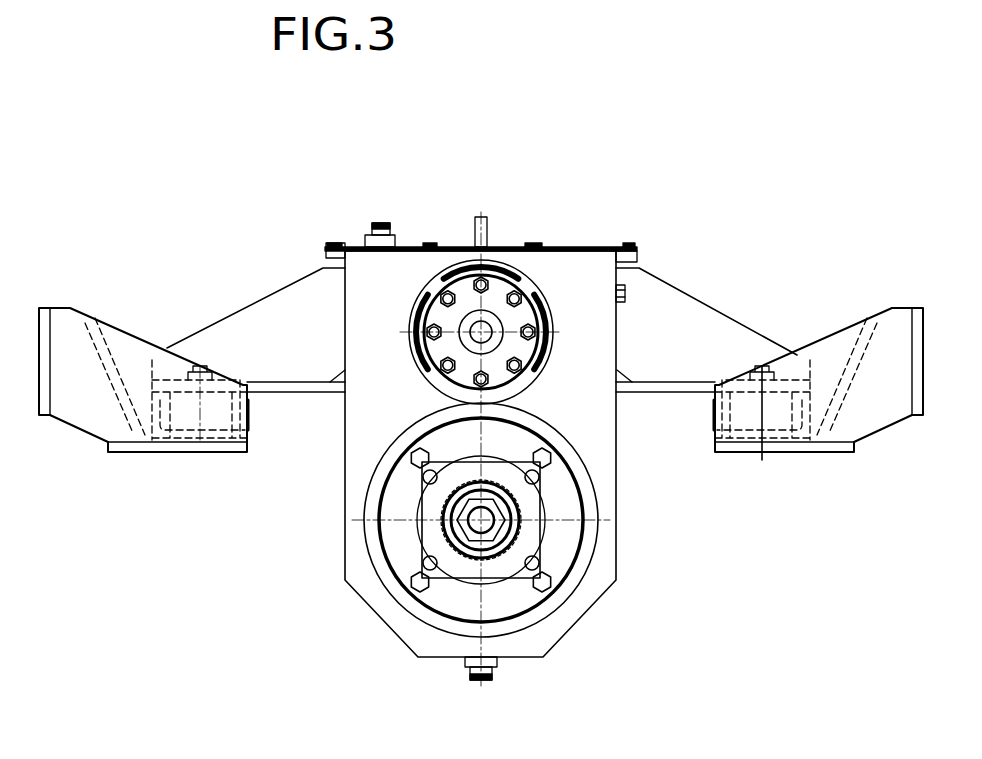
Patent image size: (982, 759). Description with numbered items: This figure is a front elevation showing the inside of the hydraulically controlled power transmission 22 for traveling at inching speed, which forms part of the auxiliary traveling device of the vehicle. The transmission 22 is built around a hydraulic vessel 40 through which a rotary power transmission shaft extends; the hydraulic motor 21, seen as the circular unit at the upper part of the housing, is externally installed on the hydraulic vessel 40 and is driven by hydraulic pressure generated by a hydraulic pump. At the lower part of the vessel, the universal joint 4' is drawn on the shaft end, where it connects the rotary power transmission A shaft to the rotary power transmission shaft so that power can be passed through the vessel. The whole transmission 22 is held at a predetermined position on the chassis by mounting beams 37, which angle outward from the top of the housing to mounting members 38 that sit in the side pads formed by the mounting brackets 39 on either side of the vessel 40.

The universal joint 4' is at (481, 578).
The hydraulic motor 21 is at (530, 287).
The hydraulically controlled power transmission 22 is at (571, 205).
The mounting beam 37 is at (275, 310).
The mounting member 38 is at (215, 423).
The mounting bracket 39 is at (127, 355).
The hydraulic vessel 40 is at (615, 532).